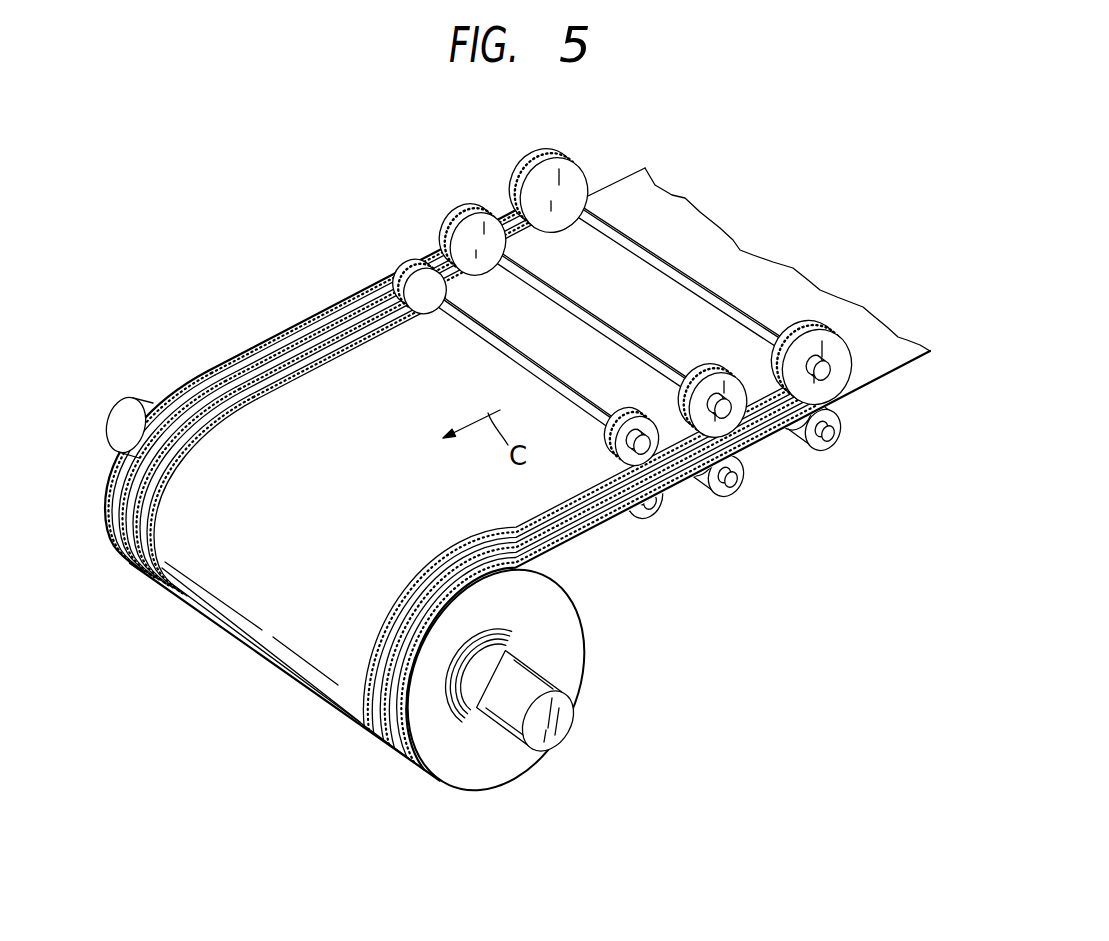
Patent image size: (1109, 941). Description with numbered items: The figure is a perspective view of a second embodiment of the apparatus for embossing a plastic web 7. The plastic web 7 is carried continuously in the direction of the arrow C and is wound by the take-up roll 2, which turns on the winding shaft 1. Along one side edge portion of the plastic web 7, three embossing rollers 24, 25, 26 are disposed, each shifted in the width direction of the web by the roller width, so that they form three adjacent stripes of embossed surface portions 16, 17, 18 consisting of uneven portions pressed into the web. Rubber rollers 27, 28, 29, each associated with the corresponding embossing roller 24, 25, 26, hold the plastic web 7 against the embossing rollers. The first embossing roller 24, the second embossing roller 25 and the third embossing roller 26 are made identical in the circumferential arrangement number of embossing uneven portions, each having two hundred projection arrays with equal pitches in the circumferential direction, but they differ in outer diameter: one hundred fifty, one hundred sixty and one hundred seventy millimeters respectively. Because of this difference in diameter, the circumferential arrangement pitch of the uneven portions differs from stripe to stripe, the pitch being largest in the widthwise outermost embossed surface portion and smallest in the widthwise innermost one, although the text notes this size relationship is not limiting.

The winding shaft 1 is at (538, 750).
The take-up roll 2 is at (488, 770).
The plastic web 7 is at (873, 390).
The embossed surface portion 16 is at (315, 324).
The embossed surface portion 17 is at (282, 358).
The embossed surface portion 18 is at (252, 382).
The first embossing roller 24 is at (413, 269).
The second embossing roller 25 is at (470, 212).
The third embossing roller 26 is at (545, 157).
The rubber roller 27 is at (648, 512).
The rubber roller 28 is at (733, 496).
The rubber roller 29 is at (823, 449).